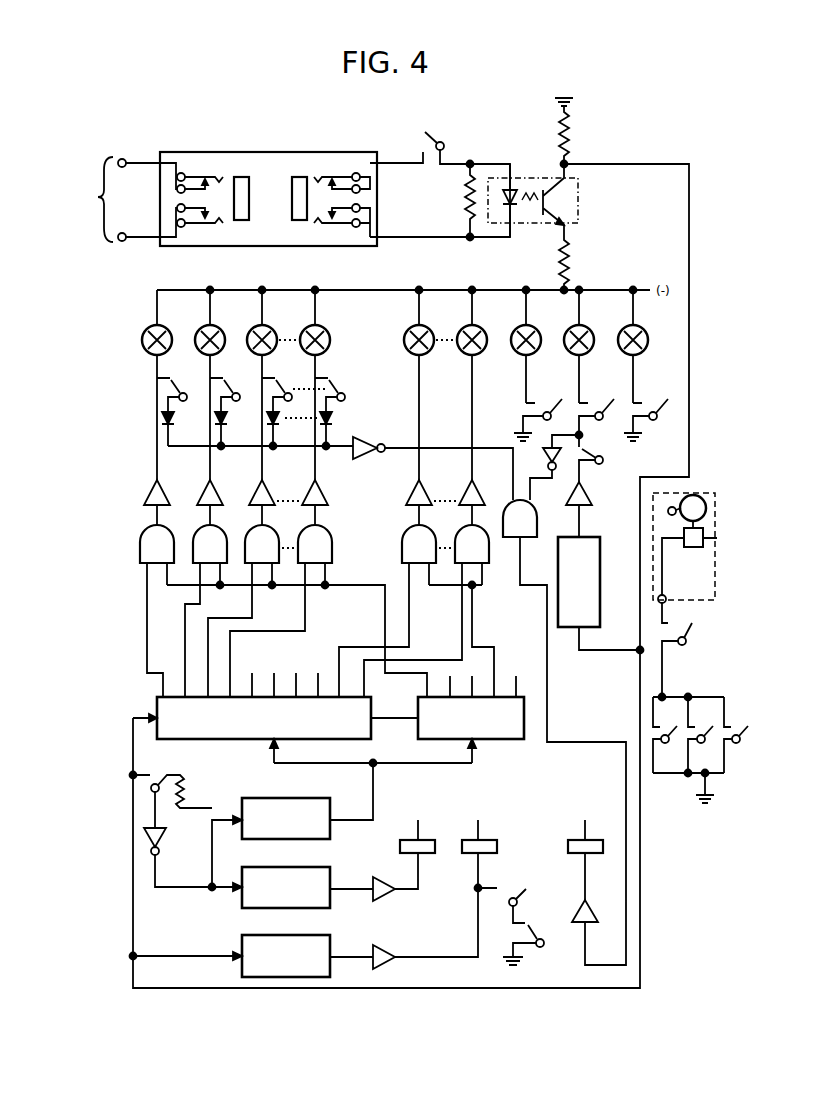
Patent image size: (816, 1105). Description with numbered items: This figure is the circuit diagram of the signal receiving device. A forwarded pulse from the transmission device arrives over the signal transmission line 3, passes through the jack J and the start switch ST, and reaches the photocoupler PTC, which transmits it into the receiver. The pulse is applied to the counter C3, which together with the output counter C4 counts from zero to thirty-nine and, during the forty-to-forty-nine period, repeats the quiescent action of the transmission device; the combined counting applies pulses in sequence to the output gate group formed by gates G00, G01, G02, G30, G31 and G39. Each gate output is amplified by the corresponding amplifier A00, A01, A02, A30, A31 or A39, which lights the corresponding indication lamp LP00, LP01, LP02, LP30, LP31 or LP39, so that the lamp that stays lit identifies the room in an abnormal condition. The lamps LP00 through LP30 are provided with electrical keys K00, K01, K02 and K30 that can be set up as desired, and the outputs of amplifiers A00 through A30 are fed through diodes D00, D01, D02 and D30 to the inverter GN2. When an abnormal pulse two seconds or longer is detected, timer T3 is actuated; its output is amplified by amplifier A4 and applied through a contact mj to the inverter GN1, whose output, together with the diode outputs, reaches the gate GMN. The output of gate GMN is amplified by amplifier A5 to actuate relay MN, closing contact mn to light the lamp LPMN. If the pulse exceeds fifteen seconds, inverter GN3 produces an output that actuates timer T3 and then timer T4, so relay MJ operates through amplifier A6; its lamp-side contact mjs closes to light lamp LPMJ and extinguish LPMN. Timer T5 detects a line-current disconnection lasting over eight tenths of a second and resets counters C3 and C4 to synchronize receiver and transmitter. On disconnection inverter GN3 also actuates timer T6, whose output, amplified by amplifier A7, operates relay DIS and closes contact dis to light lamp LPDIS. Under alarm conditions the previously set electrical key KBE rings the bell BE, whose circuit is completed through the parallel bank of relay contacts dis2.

The signal transmission line 3 is at (92, 197).
The jack J is at (284, 153).
The start switch ST is at (440, 142).
The photocoupler PTC is at (554, 166).
The indication lamp LP00 is at (152, 328).
The indication lamp LP01 is at (205, 328).
The indication lamp LP02 is at (257, 328).
The indication lamp LP30 is at (325, 328).
The indication lamp LP31 is at (413, 330).
The indication lamp LP39 is at (467, 330).
The indication lamp LPDIS is at (545, 324).
The indication lamp LPMN is at (598, 324).
The indication lamp LPMJ is at (651, 324).
The electrical key K00 is at (179, 386).
The electrical key K01 is at (232, 386).
The electrical key K02 is at (294, 386).
The electrical key K30 is at (337, 386).
The diode D00 is at (176, 420).
The diode D01 is at (229, 420).
The diode D02 is at (281, 420).
The diode D30 is at (333, 420).
The inverter GN2 is at (433, 468).
The inverter GN1 is at (547, 467).
The inverter GN3 is at (193, 841).
The amplifier A00 is at (159, 492).
The amplifier A01 is at (212, 492).
The amplifier A02 is at (264, 492).
The amplifier A30 is at (317, 492).
The amplifier A31 is at (421, 492).
The amplifier A39 is at (474, 492).
The gate G00 is at (157, 611).
The gate G01 is at (206, 611).
The gate G02 is at (252, 611).
The gate G30 is at (281, 611).
The gate G31 is at (387, 611).
The gate G39 is at (426, 611).
The counter C3 is at (151, 700).
The output counter C4 is at (536, 694).
The timer T3 is at (601, 595).
The timer T4 is at (252, 956).
The timer T5 is at (286, 818).
The timer T6 is at (307, 887).
The amplifier A4 is at (584, 497).
The amplifier A5 is at (596, 905).
The amplifier A6 is at (382, 943).
The amplifier A7 is at (382, 874).
The gate GMN is at (520, 518).
The relay DIS is at (432, 833).
The relay MJ is at (494, 833).
The relay MN is at (594, 839).
The relay contact dis is at (551, 395).
The relay contact mn is at (606, 395).
The relay contact mj is at (519, 884).
The major relay contact (lamp) mjs is at (659, 395).
The relay contact bank dis2 is at (700, 749).
The bell BE is at (693, 547).
The electrical key KBE is at (691, 628).